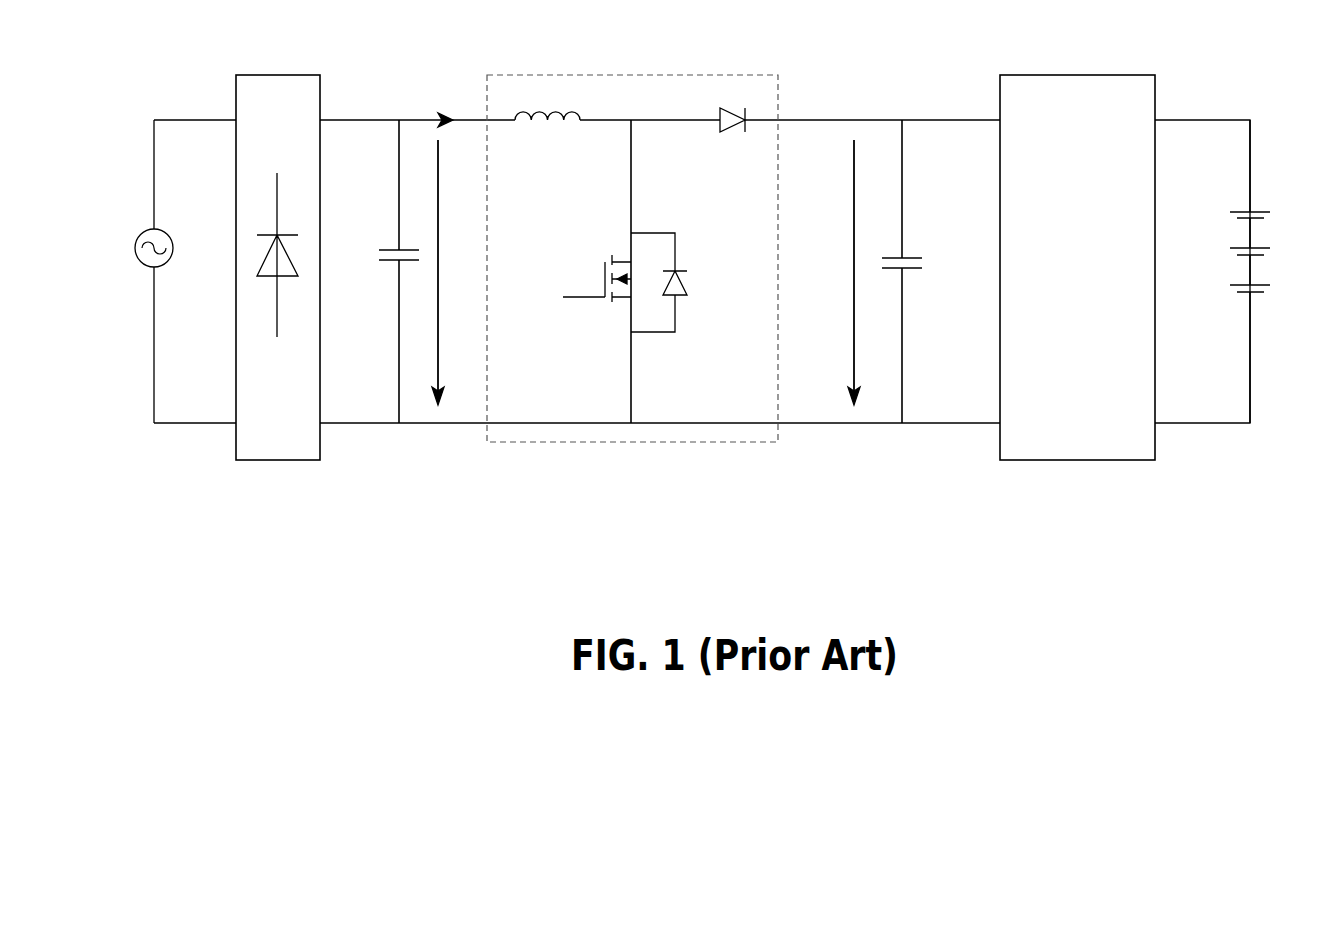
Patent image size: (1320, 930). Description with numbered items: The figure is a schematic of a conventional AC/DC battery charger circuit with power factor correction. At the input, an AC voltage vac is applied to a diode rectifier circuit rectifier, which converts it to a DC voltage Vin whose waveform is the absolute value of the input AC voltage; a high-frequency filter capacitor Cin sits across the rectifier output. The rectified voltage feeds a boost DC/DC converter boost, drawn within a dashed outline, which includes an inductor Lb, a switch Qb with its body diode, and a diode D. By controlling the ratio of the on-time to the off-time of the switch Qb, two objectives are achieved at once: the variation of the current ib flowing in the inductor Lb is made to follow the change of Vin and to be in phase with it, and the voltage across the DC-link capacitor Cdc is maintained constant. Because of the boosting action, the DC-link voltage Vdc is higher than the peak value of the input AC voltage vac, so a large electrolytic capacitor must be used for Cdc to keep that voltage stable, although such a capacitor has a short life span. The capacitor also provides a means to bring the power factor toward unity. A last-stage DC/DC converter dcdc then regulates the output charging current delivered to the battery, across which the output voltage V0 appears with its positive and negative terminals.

The AC voltage vac is at (129, 250).
The diode rectifier circuit rectifier is at (278, 267).
The high-frequency filter Cin is at (386, 271).
The DC voltage Vin is at (454, 272).
The current flowing in Lb ib is at (449, 105).
The boost DC/DC converter boost is at (632, 277).
The inductor Lb is at (550, 101).
The switch Qb is at (625, 271).
The diode D is at (740, 135).
The DC-link voltage Vdc is at (832, 272).
The DC-link capacitor Cdc is at (916, 271).
The DC/DC converter dcdc is at (1077, 267).
The output voltage V0 is at (1264, 271).